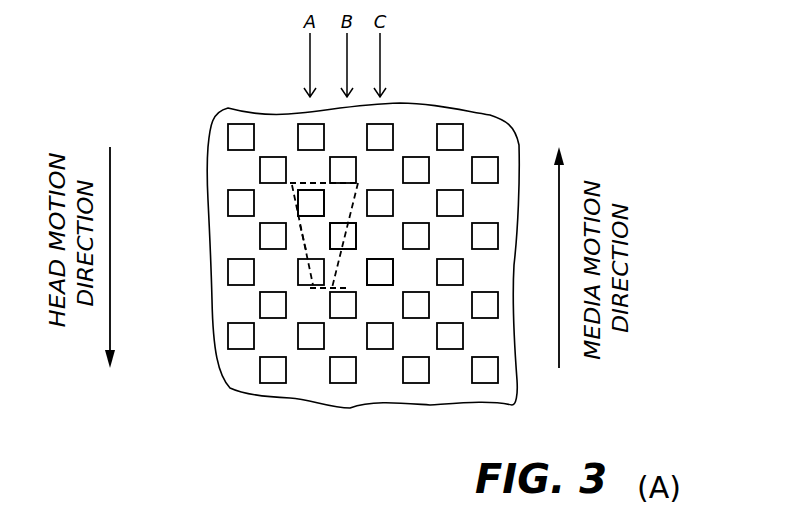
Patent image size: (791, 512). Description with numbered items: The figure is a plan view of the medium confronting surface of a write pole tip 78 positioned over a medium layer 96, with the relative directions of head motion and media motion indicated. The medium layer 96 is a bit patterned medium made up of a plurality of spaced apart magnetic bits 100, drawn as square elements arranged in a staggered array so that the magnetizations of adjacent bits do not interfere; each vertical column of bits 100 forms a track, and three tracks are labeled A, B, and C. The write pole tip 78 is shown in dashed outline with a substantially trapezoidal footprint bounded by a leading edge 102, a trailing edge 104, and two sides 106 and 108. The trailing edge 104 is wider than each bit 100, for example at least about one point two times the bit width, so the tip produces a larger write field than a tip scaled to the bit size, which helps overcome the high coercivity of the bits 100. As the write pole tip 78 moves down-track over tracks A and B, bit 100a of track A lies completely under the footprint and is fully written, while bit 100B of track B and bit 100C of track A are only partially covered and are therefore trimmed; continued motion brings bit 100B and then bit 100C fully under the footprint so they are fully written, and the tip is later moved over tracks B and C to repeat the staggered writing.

The medium layer 96 is at (523, 140).
The bits 100 is at (380, 343).
The bit of track A 100a is at (305, 197).
The bit of track B 100B is at (363, 222).
The bit of track A 100C is at (401, 254).
The write pole tip 78 is at (283, 193).
The leading edge 102 is at (305, 305).
The trailing edge 104 is at (294, 168).
The side 106 is at (282, 262).
The side 108 is at (371, 177).